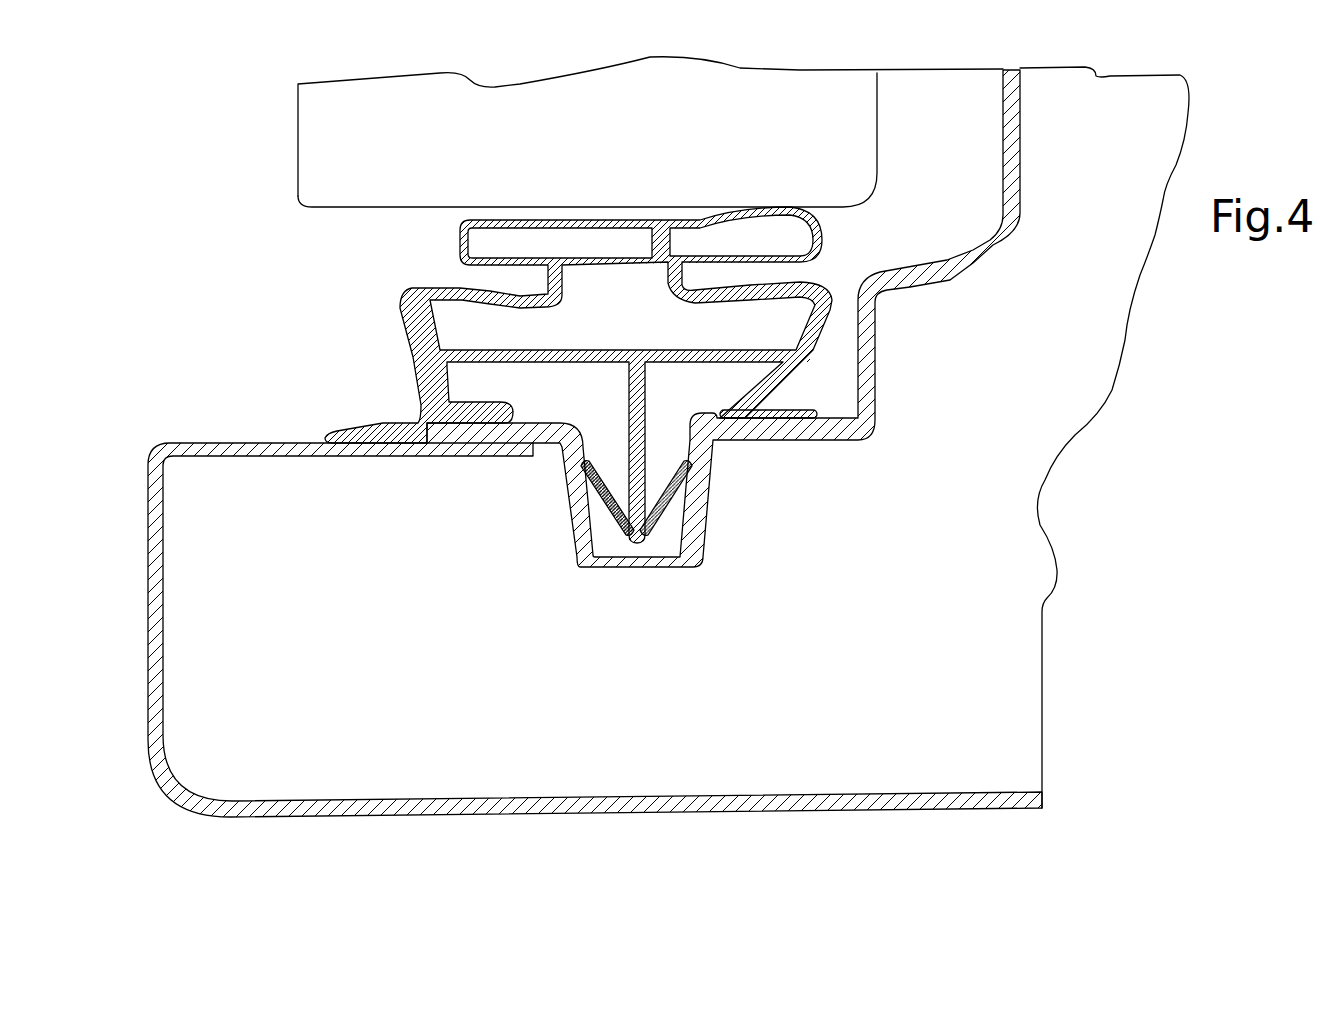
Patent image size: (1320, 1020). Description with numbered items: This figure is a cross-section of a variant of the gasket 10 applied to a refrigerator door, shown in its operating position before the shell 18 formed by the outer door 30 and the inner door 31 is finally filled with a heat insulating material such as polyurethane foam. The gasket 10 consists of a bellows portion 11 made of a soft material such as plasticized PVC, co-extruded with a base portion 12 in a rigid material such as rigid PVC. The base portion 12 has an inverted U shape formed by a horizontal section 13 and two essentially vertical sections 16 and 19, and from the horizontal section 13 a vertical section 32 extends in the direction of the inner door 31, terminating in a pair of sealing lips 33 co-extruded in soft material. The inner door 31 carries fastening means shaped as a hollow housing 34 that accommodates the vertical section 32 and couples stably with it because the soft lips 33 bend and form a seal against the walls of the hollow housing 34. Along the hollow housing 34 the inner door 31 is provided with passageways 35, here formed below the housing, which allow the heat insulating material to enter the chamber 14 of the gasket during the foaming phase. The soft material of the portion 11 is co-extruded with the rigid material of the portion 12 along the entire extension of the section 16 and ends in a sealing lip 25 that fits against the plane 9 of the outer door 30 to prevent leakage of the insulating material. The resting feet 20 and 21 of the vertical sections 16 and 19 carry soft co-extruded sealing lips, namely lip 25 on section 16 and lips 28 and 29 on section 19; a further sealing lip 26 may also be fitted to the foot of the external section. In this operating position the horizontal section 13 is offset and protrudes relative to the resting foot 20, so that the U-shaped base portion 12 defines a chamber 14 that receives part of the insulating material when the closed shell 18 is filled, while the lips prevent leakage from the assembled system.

The plane of the outer door 9 is at (400, 456).
The gasket 10 is at (350, 334).
The bellows portion 11 is at (405, 292).
The base portion 12 is at (648, 350).
The horizontal section 13 is at (778, 350).
The chamber 14 is at (583, 372).
The essentially vertical section 16 is at (427, 386).
The shell 18 is at (489, 646).
The essentially vertical section 19 is at (787, 380).
The resting foot 20 is at (497, 402).
The resting foot 21 is at (735, 413).
The sealing lip 25 is at (345, 445).
The further sealing lip 26 is at (487, 440).
The sealing lip 28 is at (807, 427).
The sealing lip 29 is at (697, 427).
The outer door 30 is at (162, 626).
The inner door 31 is at (875, 313).
The vertical section 32 is at (632, 425).
The sealing lips 33 is at (675, 510).
The hollow housing 34 is at (603, 477).
The passageways 35 is at (660, 562).